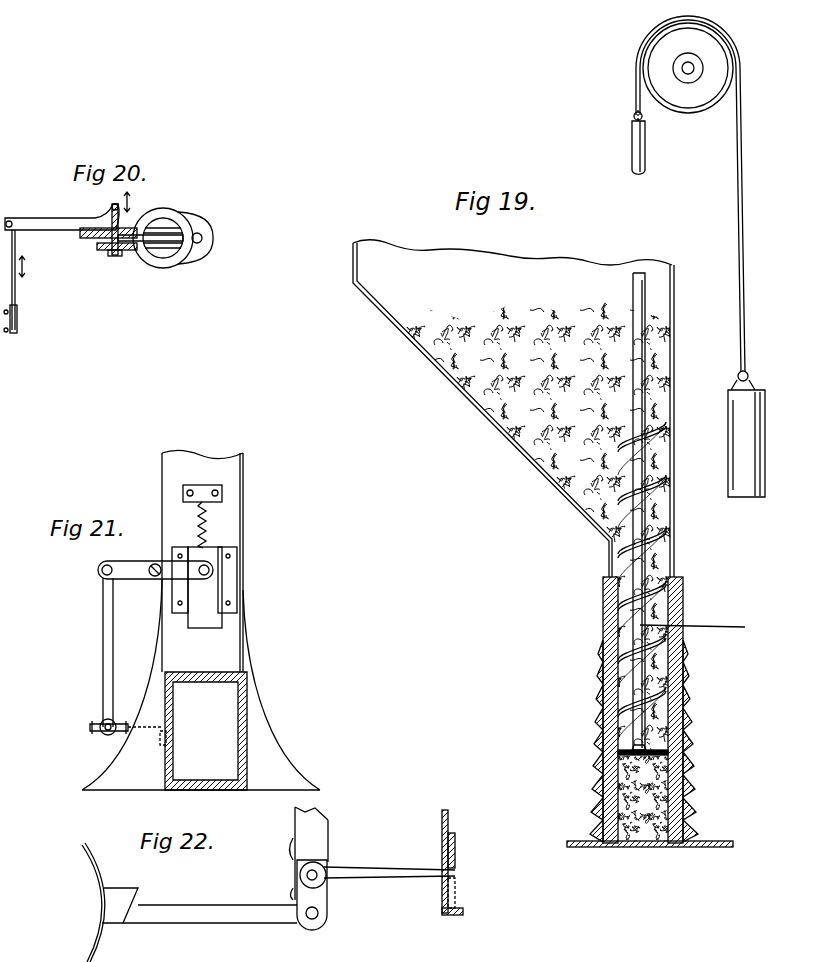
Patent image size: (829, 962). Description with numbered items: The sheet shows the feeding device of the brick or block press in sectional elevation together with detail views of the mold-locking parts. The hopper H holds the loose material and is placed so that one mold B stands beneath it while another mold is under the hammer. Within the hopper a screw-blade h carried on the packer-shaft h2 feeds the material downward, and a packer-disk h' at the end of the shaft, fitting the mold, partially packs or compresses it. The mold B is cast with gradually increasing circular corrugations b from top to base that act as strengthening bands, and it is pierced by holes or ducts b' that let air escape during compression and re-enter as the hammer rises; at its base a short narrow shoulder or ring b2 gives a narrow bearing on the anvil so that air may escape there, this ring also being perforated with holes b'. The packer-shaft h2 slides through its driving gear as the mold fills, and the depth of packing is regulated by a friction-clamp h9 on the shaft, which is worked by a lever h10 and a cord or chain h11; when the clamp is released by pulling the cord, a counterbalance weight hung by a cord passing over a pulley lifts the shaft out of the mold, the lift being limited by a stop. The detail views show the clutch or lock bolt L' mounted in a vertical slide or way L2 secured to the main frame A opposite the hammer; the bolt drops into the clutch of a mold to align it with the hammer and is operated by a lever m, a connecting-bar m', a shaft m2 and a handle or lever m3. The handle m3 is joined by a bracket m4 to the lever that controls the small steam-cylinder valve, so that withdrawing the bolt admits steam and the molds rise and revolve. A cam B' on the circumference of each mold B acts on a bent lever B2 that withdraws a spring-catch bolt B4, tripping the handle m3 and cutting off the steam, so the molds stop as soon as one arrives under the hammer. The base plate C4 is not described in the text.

In FIG. 19, the packer-shaft h2 is at (647, 157).
In FIG. 20, the packer-shaft h2 is at (172, 242).
In FIG. 19, the hopper H is at (535, 435).
In FIG. 19, the screw-blade h is at (664, 512).
In FIG. 19, the mold B is at (651, 710).
In FIG. 22, the mold B is at (83, 902).
In FIG. 19, the circular projections or corrugations b is at (644, 741).
In FIG. 19, the holes or ducts b' is at (644, 734).
In FIG. 19, the shoulder or ring b2 is at (603, 843).
In FIG. 19, the packer-disk h' is at (685, 793).
In FIG. 19, the base plate C4 is at (650, 835).
In FIG. 20, the lever h10 is at (22, 257).
In FIG. 20, the cord or chain h11 is at (18, 322).
In FIG. 20, the friction-clamp h9 is at (158, 266).
In FIG. 21, the main frame A is at (238, 721).
In FIG. 21, the vertical slide or way L2 is at (222, 568).
In FIG. 21, the clutch or lock bolt L' is at (230, 588).
In FIG. 21, the lever m is at (155, 570).
In FIG. 21, the connecting-bar m' is at (96, 652).
In FIG. 21, the shaft m2 is at (120, 741).
In FIG. 22, the cam B' is at (137, 900).
In FIG. 22, the bent lever B2 is at (225, 902).
In FIG. 22, the spring-catch bolt B4 is at (389, 862).
In FIG. 22, the bracket m4 is at (447, 827).
In FIG. 22, the handle or lever m3 is at (456, 851).